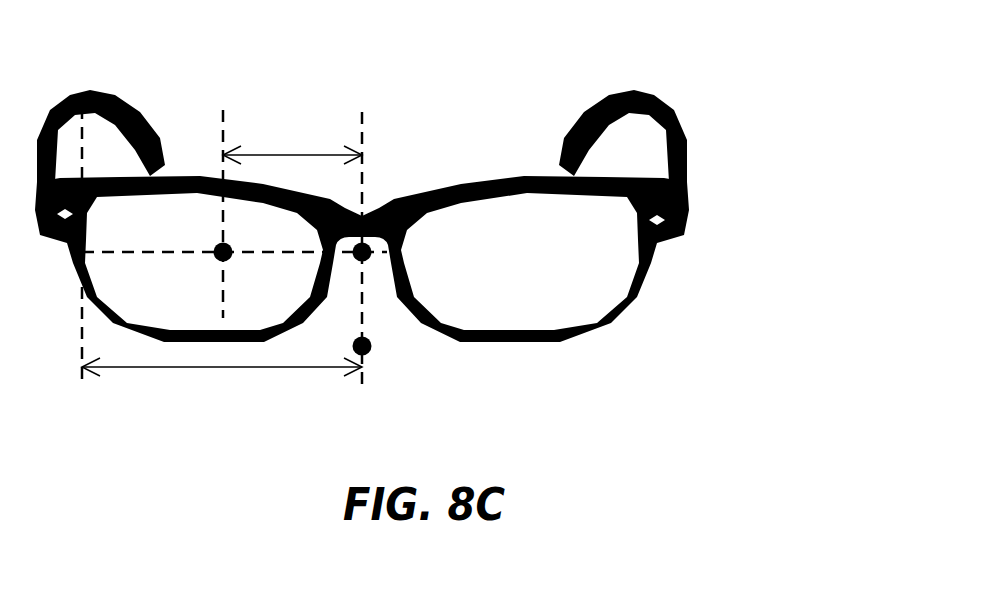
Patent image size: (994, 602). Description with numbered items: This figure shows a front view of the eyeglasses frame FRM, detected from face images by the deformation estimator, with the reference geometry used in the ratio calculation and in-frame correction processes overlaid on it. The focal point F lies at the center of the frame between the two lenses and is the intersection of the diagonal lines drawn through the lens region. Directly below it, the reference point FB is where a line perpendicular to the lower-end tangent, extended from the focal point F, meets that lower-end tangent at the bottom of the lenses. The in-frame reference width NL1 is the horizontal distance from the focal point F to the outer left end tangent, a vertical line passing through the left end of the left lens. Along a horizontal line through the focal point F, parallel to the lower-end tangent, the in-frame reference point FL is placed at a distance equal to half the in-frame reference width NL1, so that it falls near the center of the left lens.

The eyeglasses frame FRM is at (687, 207).
The in-frame reference point FL is at (214, 250).
The focal point F is at (418, 207).
The reference point FB is at (372, 346).
The in-frame reference width NL1 is at (222, 388).